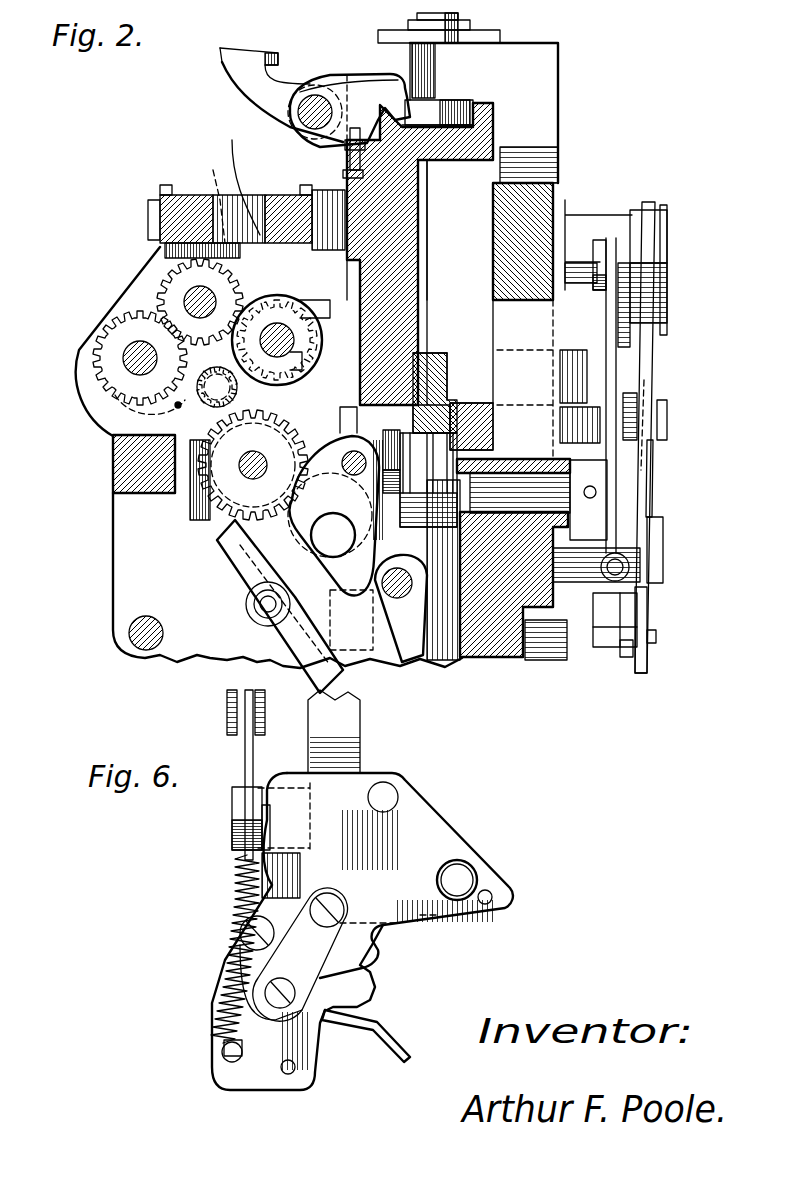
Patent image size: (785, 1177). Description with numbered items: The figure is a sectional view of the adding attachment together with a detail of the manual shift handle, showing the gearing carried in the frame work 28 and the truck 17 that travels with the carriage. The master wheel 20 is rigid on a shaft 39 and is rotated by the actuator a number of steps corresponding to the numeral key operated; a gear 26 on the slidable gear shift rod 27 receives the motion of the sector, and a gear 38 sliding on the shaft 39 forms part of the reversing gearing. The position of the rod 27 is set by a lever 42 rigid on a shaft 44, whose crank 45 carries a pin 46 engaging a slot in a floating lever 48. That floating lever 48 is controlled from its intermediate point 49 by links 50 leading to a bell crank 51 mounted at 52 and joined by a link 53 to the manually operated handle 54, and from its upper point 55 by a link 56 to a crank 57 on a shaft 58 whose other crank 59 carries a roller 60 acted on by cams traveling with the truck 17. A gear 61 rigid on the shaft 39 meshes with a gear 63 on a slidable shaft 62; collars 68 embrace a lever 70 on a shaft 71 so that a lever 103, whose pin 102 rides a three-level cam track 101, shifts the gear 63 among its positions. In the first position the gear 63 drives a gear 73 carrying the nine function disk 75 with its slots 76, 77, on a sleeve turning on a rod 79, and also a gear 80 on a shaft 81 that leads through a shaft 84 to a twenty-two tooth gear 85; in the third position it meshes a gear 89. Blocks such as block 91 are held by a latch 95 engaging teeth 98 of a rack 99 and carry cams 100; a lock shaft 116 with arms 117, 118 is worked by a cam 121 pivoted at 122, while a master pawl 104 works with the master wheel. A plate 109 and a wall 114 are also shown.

In FIG. 2, the truck 17 is at (423, 200).
In FIG. 2, the wheel 20 is at (190, 497).
In FIG. 2, the gear 26 is at (300, 520).
In FIG. 2, the shaft 27 is at (369, 587).
In FIG. 2, the frame work 28 is at (490, 655).
In FIG. 6, the frame work 28 is at (362, 738).
In FIG. 2, the gear 38 is at (215, 530).
In FIG. 2, the shaft 39 is at (253, 465).
In FIG. 2, the lever 42 is at (285, 640).
In FIG. 2, the shaft 44 is at (432, 650).
In FIG. 2, the crank 45 is at (620, 650).
In FIG. 2, the pin 46 is at (657, 636).
In FIG. 2, the floating lever 48 is at (650, 665).
In FIG. 2, the intermediate point 49 is at (668, 412).
In FIG. 2, the links 50 is at (635, 393).
In FIG. 6, the links 50 is at (246, 702).
In FIG. 2, the bell crank 51 is at (653, 478).
In FIG. 6, the bell crank 51 is at (245, 760).
In FIG. 6, the mounting point of bell crank 52 is at (232, 815).
In FIG. 6, the link 53 is at (245, 900).
In FIG. 6, the manually operated handle 54 is at (410, 885).
In FIG. 2, the upper point 55 is at (670, 291).
In FIG. 2, the link 56 is at (622, 250).
In FIG. 2, the crank 57 is at (606, 308).
In FIG. 2, the shaft 58 is at (532, 499).
In FIG. 2, the crank 59 is at (440, 400).
In FIG. 2, the roller 60 is at (430, 390).
In FIG. 2, the gear 61 is at (251, 476).
In FIG. 2, the shaft 62 is at (195, 395).
In FIG. 2, the gear 63 is at (180, 407).
In FIG. 2, the collar 68 is at (110, 405).
In FIG. 2, the lever 70 is at (340, 170).
In FIG. 2, the shaft 71 is at (209, 193).
In FIG. 2, the gear 73 is at (305, 362).
In FIG. 2, the 9 function disk 75 is at (305, 370).
In FIG. 2, the slot 76 is at (340, 342).
In FIG. 2, the slot 77 is at (200, 314).
In FIG. 2, the rod 79 is at (340, 300).
In FIG. 2, the gear 80 is at (120, 362).
In FIG. 2, the shaft 81 is at (135, 368).
In FIG. 2, the shaft 84 is at (180, 302).
In FIG. 2, the gear 85 is at (340, 280).
In FIG. 2, the gear 89 is at (180, 280).
In FIG. 2, the block 91 is at (385, 250).
In FIG. 2, the latch 95 is at (238, 72).
In FIG. 2, the teeth 98 is at (367, 117).
In FIG. 2, the rack 99 is at (345, 150).
In FIG. 2, the cam 100 is at (370, 360).
In FIG. 2, the cam track 101 is at (370, 225).
In FIG. 2, the pin 102 is at (390, 155).
In FIG. 2, the lever 103 is at (340, 182).
In FIG. 2, the master pawl 104 is at (225, 585).
In FIG. 2, the plate 109 is at (82, 330).
In FIG. 2, the wall 114 is at (475, 328).
In FIG. 2, the shaft 116 is at (372, 255).
In FIG. 2, the arm 117 is at (325, 325).
In FIG. 2, the arm 118 is at (470, 258).
In FIG. 2, the cam 121 is at (195, 225).
In FIG. 2, the pivot of cam 122 is at (233, 179).